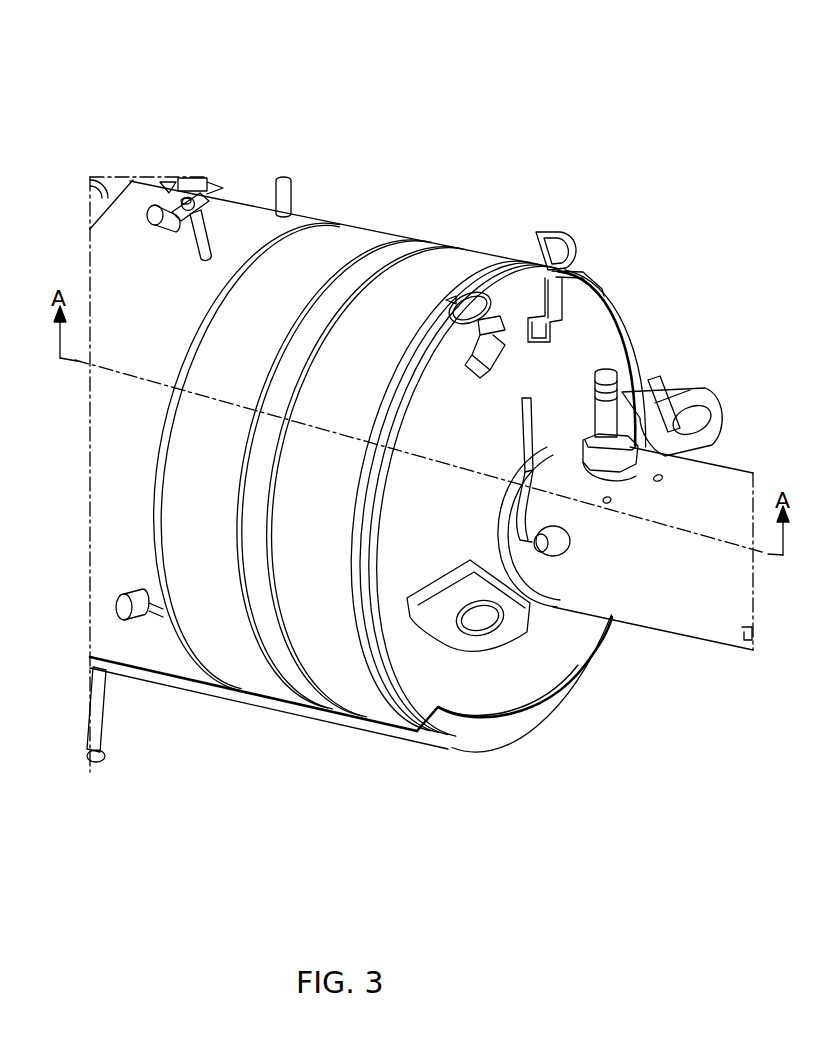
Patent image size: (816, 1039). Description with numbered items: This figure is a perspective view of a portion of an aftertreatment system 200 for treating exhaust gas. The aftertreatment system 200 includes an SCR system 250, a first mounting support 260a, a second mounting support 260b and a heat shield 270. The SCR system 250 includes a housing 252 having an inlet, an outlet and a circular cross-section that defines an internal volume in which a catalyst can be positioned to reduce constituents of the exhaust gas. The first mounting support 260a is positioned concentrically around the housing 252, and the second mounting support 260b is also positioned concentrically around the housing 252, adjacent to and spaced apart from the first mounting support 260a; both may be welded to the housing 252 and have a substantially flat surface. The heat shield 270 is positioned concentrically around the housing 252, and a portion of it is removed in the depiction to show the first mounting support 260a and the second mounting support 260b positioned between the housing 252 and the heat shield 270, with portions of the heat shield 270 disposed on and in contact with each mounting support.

The aftertreatment system 200 is at (581, 108).
The SCR system 250 is at (130, 216).
The housing 252 is at (101, 441).
The first mounting support 260a is at (457, 262).
The second mounting support 260b is at (353, 241).
The heat shield 270 is at (452, 742).